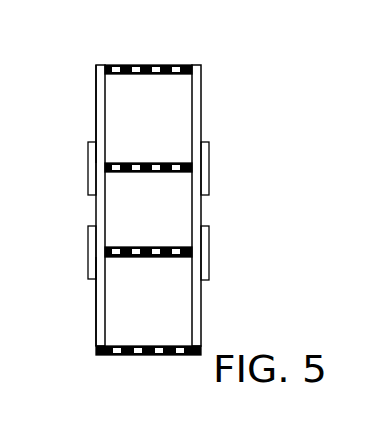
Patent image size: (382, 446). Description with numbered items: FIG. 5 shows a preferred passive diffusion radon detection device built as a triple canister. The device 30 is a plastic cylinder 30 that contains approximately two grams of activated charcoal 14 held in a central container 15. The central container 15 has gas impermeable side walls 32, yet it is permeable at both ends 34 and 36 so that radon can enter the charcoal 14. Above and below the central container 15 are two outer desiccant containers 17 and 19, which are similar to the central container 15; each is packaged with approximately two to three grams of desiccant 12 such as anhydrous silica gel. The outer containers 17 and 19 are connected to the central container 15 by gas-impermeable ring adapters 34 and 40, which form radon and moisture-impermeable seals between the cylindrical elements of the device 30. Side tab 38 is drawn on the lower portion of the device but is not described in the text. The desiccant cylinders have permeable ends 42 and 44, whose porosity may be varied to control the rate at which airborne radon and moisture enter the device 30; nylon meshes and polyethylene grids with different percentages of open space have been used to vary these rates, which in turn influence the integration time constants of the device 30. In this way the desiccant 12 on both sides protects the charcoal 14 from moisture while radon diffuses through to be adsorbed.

The plastic cylinder 30 is at (233, 66).
The gas impermeable side walls 32 is at (96, 132).
The outer desiccant container 19 is at (96, 113).
The outer desiccant container 17 is at (96, 333).
The permeable end 44 is at (147, 65).
The permeable end / ring adapter 34 is at (143, 164).
The permeable end 36 is at (158, 258).
The permeable end 42 is at (160, 356).
The gas-impermeable ring adapter 40 is at (209, 172).
The lower side tab 38 is at (209, 262).
The desiccant 12 is at (154, 120).
The activated charcoal 14 is at (159, 225).
The central container 15 is at (110, 234).